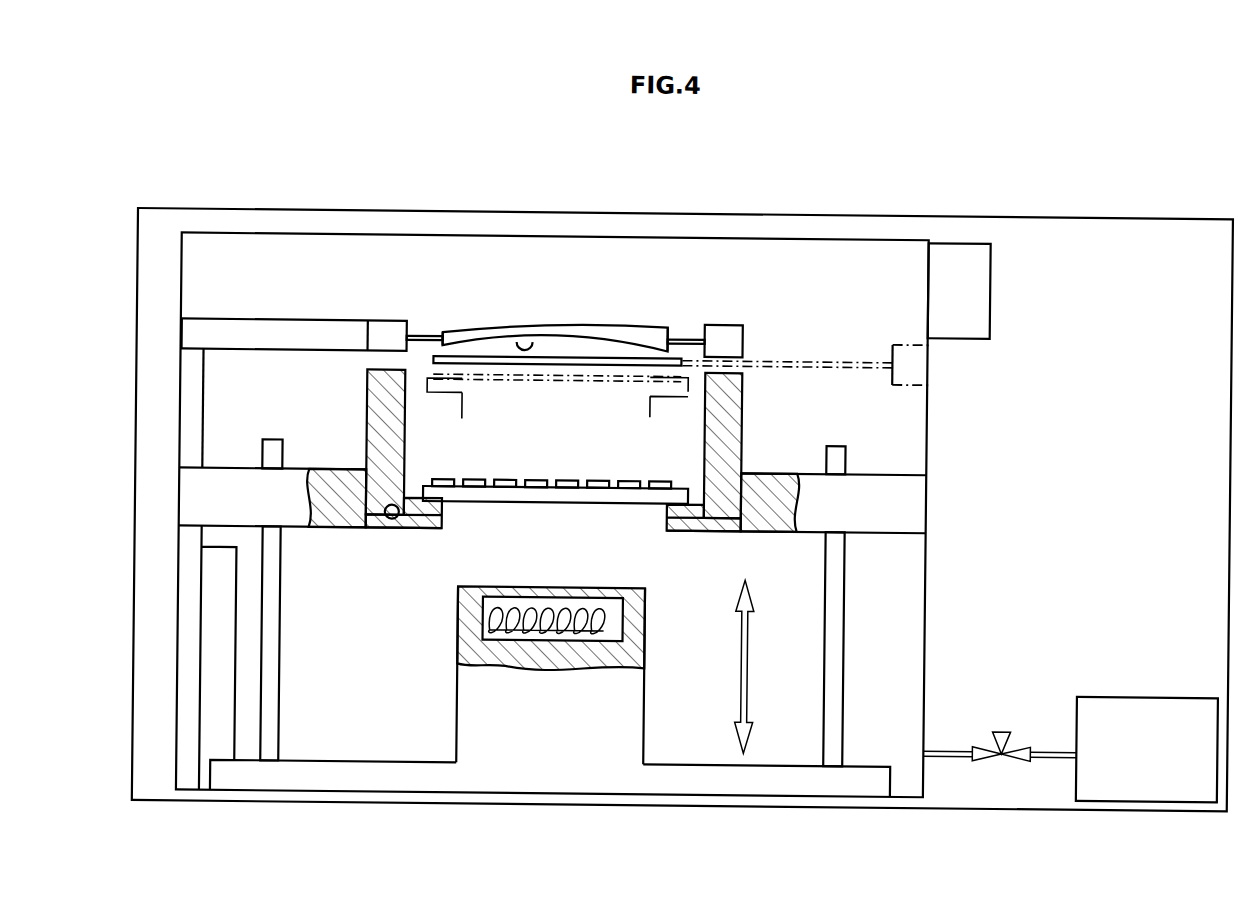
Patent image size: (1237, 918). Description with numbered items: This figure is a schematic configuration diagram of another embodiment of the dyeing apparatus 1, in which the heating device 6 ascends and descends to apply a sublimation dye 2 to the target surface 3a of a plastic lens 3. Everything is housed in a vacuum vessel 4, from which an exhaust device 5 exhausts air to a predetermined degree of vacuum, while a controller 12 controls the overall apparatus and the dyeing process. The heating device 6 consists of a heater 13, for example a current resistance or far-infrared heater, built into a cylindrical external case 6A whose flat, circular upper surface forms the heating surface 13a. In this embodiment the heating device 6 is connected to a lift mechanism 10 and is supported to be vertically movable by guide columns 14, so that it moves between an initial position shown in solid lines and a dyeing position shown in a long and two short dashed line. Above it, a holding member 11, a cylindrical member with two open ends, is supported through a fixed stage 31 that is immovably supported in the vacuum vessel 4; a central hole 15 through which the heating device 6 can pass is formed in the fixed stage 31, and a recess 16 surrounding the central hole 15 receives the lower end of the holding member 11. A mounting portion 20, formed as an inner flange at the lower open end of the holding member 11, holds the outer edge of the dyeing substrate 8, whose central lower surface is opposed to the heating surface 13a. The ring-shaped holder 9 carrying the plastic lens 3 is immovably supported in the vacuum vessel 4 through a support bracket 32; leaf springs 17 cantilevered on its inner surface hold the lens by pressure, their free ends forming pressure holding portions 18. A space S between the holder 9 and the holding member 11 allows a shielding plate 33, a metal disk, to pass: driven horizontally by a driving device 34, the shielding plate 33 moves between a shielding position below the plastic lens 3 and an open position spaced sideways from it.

The dyeing apparatus 1 is at (179, 119).
The sublimation dye 2 is at (575, 476).
The plastic lens 3 is at (562, 305).
The target surface 3a is at (513, 336).
The vacuum vessel 4 is at (1096, 197).
The exhaust device 5 is at (1143, 687).
The heating device 6 is at (452, 402).
The external case 6A is at (462, 686).
The dyeing substrate 8 is at (516, 501).
The holder 9 is at (732, 308).
The lift mechanism 10 is at (221, 586).
The holding member 11 is at (364, 376).
The controller 12 is at (991, 288).
The heater 13 is at (467, 612).
The heating surface 13a is at (564, 583).
The guide columns 14 is at (852, 613).
The central hole 15 is at (668, 515).
The recess 16 is at (391, 508).
The leaf springs 17 is at (419, 330).
The pressure holding portion 18 is at (437, 330).
The mounting portion 20 is at (443, 502).
The fixed stage 31 is at (898, 466).
The support bracket 32 is at (237, 319).
The shielding plate 33 is at (618, 345).
The driving device 34 is at (908, 337).
The space S is at (752, 356).